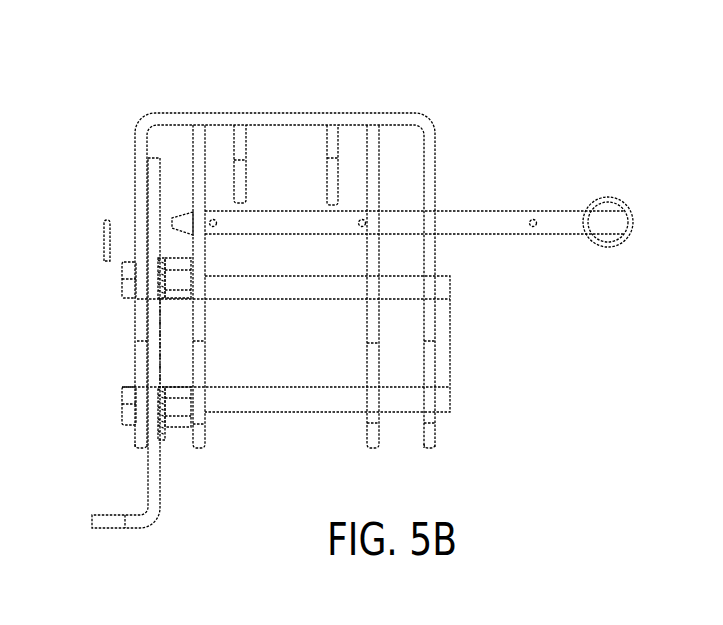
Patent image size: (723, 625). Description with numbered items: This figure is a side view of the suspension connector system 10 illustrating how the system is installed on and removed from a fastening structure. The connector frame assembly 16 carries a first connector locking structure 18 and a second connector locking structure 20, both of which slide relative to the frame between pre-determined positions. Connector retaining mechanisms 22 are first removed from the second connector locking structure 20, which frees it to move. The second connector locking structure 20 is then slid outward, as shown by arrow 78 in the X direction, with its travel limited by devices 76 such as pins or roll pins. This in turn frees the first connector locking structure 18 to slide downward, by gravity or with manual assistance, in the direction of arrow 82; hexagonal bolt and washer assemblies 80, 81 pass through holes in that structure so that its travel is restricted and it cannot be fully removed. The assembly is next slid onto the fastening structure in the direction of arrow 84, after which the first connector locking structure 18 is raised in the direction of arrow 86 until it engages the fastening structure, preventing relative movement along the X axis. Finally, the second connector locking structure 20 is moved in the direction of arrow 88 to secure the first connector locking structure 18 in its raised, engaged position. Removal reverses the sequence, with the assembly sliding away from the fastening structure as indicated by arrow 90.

The suspension connector system 10 is at (56, 342).
The connector frame assembly 16 is at (370, 113).
The first connector locking structure 18 is at (137, 530).
The second connector locking structure 20 is at (540, 236).
The connector retaining mechanisms 22 is at (103, 240).
The devices 76 is at (536, 220).
The arrow 78 is at (679, 222).
The device 80 is at (121, 273).
The device 81 is at (121, 412).
The arrow 82 is at (103, 495).
The arrow 84 is at (85, 133).
The arrow 86 is at (184, 478).
The arrow 88 is at (650, 193).
The arrow 90 is at (489, 133).